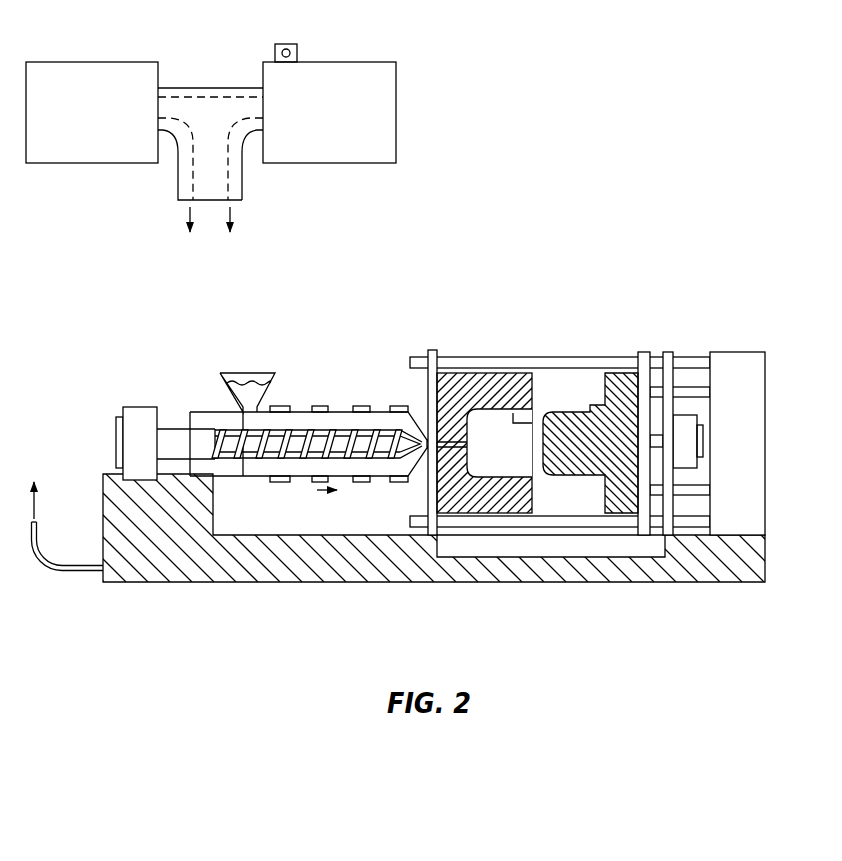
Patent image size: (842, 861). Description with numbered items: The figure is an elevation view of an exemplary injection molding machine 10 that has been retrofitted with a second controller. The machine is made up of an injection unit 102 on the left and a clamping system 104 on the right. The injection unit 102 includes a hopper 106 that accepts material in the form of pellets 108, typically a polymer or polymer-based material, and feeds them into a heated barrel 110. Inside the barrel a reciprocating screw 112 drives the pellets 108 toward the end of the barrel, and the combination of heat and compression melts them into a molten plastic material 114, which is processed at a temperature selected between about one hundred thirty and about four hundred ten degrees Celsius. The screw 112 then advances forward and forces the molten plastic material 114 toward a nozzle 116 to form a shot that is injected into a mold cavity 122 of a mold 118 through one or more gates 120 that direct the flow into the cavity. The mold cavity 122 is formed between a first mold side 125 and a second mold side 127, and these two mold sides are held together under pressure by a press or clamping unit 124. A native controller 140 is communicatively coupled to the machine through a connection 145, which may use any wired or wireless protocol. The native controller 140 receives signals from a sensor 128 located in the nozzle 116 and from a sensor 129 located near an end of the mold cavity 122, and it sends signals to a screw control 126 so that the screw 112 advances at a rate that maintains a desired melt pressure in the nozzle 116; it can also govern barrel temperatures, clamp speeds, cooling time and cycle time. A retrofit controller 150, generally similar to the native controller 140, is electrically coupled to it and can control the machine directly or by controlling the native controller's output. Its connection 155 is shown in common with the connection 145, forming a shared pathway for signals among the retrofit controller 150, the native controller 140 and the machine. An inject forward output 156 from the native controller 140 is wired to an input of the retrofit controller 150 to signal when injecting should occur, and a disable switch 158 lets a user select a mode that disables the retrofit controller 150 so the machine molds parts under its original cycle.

The injection molding machine 10 is at (492, 230).
The injection unit 102 is at (309, 489).
The clamping system 104 is at (548, 592).
The hopper 106 is at (250, 372).
The pellets 108 is at (243, 393).
The heated barrel 110 is at (344, 405).
The reciprocating screw 112 is at (258, 447).
The molten plastic material 114 is at (387, 431).
The nozzle 116 is at (439, 373).
The mold 118 is at (535, 427).
The gates 120 is at (472, 388).
The mold cavity 122 is at (502, 416).
The clamping unit 124 is at (707, 338).
The first mold side 125 is at (490, 499).
The screw control 126 is at (381, 492).
The second mold side 127 is at (585, 464).
The sensor 128 is at (428, 438).
The sensor 129 is at (538, 433).
The native controller 140 is at (115, 62).
The connection 145 is at (178, 192).
The retrofit controller 150 is at (352, 62).
The connection 155 is at (229, 187).
The inject forward output 156 is at (205, 88).
The disable switch 158 is at (290, 44).